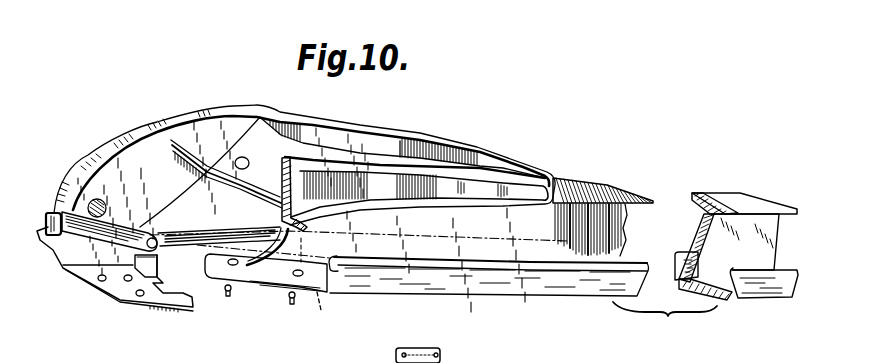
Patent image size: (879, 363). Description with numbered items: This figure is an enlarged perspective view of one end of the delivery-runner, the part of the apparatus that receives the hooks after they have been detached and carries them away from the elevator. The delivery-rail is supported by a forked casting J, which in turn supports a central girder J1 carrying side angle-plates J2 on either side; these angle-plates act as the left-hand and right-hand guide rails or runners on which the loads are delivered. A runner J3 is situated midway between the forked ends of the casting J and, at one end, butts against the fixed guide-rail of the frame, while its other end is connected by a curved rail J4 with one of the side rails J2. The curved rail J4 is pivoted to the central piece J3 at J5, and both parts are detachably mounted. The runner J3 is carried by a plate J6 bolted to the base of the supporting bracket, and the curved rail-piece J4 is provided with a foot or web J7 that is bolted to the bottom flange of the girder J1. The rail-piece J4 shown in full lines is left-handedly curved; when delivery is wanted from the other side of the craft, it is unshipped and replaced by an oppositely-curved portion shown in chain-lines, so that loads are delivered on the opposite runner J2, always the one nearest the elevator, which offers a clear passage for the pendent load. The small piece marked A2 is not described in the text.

The forked casting J is at (313, 177).
The central girder J1 is at (440, 242).
The side angle-plates J2 is at (547, 285).
The runner J3 is at (78, 248).
The curved rail J4 is at (200, 243).
The pivot J5 is at (152, 248).
The plate J6 is at (115, 283).
The foot or web J7 is at (230, 296).
The block A2 is at (440, 353).